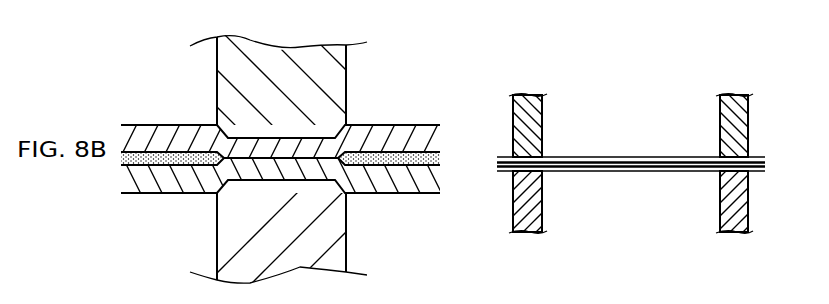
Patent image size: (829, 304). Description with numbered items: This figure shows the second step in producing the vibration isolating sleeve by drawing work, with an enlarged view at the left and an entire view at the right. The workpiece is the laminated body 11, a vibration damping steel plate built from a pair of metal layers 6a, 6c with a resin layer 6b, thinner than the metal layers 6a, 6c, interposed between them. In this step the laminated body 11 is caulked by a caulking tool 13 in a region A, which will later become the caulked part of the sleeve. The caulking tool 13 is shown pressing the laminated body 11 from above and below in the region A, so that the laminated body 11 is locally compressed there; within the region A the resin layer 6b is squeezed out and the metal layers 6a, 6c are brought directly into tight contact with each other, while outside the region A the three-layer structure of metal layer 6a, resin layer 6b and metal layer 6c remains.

The metal layer 6a is at (135, 148).
The resin layer 6b is at (158, 157).
The metal layer 6c is at (203, 150).
The laminated body 11 is at (415, 113).
The caulking tool 13 is at (337, 80).
The region A is at (236, 203).